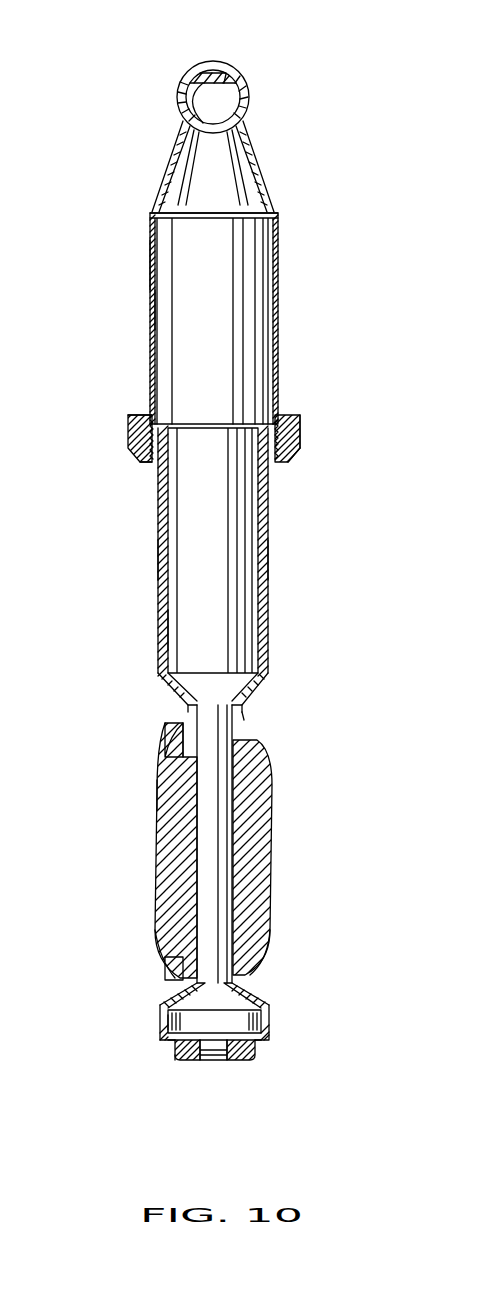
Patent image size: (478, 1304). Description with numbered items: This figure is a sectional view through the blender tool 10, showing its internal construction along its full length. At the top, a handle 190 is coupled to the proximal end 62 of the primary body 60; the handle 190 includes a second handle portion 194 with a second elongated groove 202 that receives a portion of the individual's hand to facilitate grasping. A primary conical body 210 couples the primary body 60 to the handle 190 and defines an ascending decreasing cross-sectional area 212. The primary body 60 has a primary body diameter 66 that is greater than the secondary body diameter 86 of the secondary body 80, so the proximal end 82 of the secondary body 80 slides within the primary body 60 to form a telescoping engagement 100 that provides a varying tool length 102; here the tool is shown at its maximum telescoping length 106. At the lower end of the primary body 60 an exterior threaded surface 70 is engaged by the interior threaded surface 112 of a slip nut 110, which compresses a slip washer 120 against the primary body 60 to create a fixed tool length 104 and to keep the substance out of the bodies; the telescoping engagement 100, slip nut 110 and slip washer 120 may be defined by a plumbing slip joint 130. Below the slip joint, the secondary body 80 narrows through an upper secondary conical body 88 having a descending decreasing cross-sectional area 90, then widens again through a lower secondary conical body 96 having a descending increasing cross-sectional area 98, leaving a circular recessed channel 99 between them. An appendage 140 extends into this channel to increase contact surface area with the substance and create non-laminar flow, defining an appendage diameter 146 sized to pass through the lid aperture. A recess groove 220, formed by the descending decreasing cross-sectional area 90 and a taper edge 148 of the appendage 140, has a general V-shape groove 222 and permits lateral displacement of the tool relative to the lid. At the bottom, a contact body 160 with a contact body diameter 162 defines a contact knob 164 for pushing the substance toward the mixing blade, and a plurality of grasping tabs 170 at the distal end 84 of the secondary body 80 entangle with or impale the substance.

The blender tool 10 is at (185, 72).
The handle 190 is at (215, 62).
The second handle portion 194 is at (233, 99).
The second elongated groove 202 is at (195, 98).
The ascending decreasing cross-sectional area 212 is at (173, 150).
The primary conical body 210 is at (256, 150).
The proximal end 62 is at (150, 217).
The fixed tool length 104 is at (150, 262).
The primary body diameter 66 is at (150, 305).
The primary body 60 is at (278, 297).
The proximal end 82 is at (150, 410).
The interior threaded surface 112 is at (140, 422).
The slip nut 110 is at (130, 445).
The telescoping engagement 100 is at (155, 455).
The exterior threaded surface 70 is at (292, 420).
The plumbing slip joint 130 is at (300, 445).
The slip washer 120 is at (276, 462).
The secondary body diameter 86 is at (160, 557).
The maximum telescoping length 106 is at (268, 560).
The secondary body 80 is at (268, 600).
The varying tool length 102 is at (160, 628).
The descending decreasing cross-sectional area 90 is at (172, 697).
The upper secondary conical body 88 is at (255, 697).
The general V-shape groove 222 is at (182, 707).
The circular recessed channel 99 is at (244, 708).
The recess groove 220 is at (244, 712).
The taper edge 148 is at (168, 748).
The appendage diameter 146 is at (158, 795).
The appendage 140 is at (272, 779).
The descending increasing cross-sectional area 98 is at (172, 1000).
The lower secondary conical body 96 is at (262, 1000).
The contact body 160 is at (270, 1017).
The contact knob 164 is at (160, 1022).
The contact body diameter 162 is at (266, 1032).
The distal end 84 is at (166, 1042).
The grasping tabs 170 is at (230, 1060).